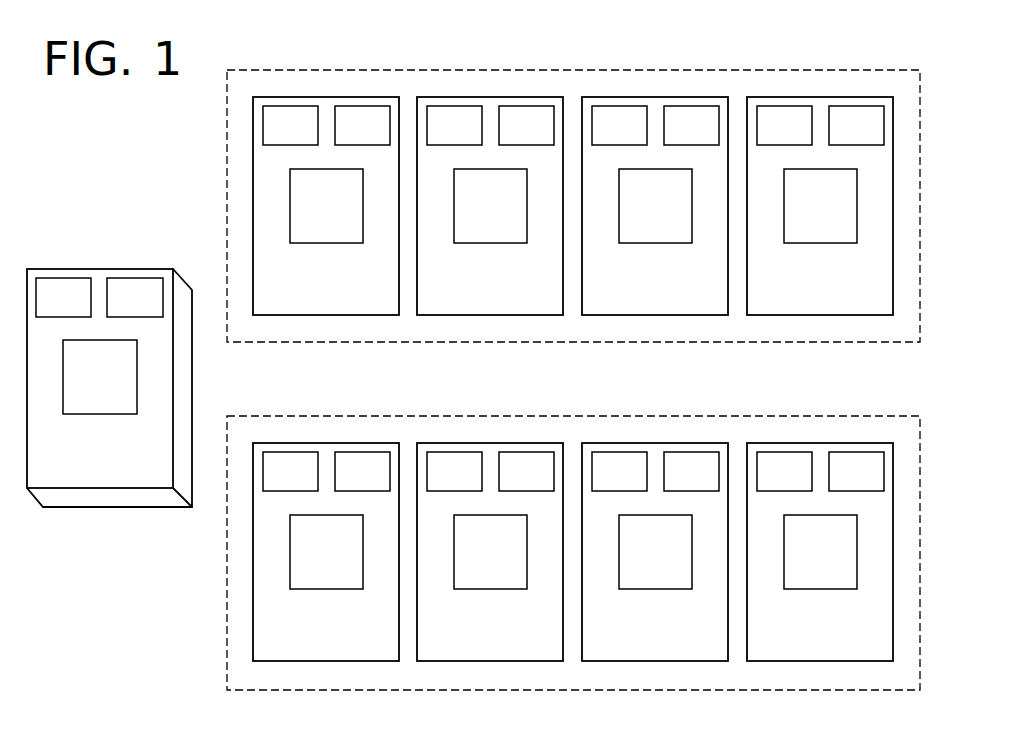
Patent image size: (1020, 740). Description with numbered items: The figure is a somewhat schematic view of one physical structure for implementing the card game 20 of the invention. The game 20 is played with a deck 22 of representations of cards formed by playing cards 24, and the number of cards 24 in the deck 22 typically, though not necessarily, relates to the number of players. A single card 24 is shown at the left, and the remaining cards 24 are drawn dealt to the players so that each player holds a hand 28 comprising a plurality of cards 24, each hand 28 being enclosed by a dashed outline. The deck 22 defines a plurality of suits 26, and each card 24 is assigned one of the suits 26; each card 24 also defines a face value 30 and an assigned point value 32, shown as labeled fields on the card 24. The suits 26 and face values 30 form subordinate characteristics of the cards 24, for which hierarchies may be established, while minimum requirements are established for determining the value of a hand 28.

The game 20 is at (190, 183).
The deck 22 is at (123, 518).
The playing card 24 is at (100, 478).
The suit 26 is at (132, 280).
The hand 28 is at (235, 230).
The face value 30 is at (322, 235).
The point value 32 is at (58, 280).